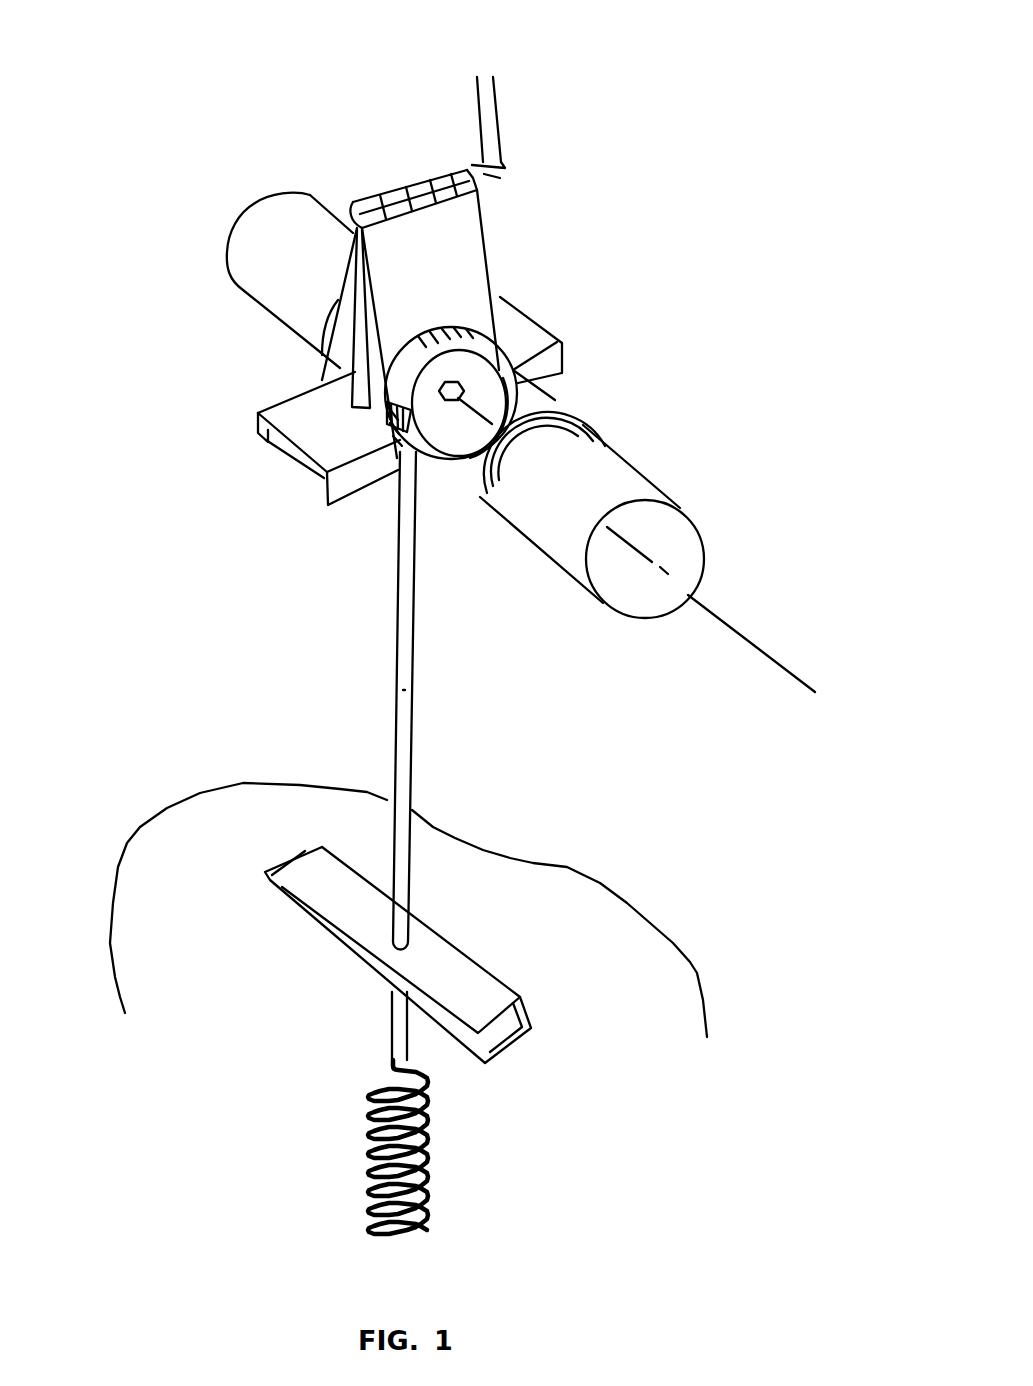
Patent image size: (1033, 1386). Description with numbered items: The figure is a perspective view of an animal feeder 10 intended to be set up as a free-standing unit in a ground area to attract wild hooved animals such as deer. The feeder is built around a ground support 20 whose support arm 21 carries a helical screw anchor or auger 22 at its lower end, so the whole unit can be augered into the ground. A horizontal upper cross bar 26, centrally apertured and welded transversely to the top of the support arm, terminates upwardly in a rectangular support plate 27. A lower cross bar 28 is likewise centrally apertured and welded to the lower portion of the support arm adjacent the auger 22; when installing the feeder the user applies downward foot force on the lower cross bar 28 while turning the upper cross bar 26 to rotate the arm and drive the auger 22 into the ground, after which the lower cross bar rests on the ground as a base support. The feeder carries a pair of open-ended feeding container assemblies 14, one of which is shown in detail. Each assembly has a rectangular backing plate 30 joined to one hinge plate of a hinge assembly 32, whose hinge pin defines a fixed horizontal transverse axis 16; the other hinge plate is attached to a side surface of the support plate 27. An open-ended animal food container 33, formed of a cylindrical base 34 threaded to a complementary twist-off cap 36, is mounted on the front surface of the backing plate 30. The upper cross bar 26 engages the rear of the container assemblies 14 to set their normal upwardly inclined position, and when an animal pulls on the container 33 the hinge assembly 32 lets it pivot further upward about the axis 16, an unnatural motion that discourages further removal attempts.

The animal feeder 10 is at (654, 70).
The feeding container assembly 14 is at (230, 265).
The horizontal transverse axis 16 is at (622, 912).
The ground support 20 is at (398, 608).
The support arm 21 is at (406, 692).
The helical screw anchor or auger 22 is at (428, 1160).
The upper cross bar 26 is at (256, 438).
The support plate 27 is at (353, 353).
The lower cross bar 28 is at (290, 888).
The backing plate 30 is at (470, 250).
The hinge assembly 32 is at (433, 175).
The animal food container 33 is at (598, 430).
The cylindrical base 34 is at (650, 491).
The twist-off cap 36 is at (513, 370).